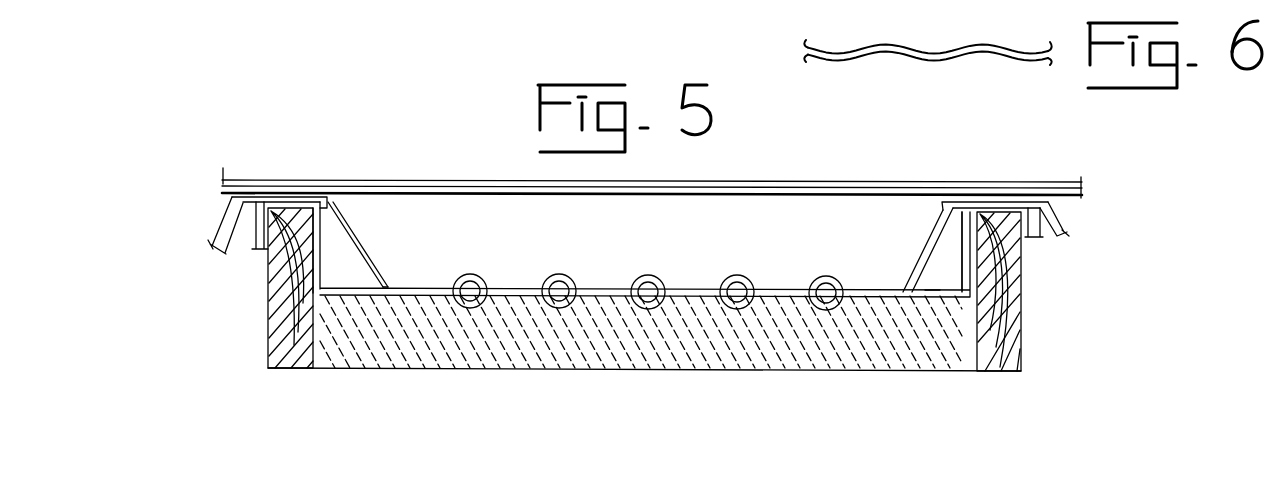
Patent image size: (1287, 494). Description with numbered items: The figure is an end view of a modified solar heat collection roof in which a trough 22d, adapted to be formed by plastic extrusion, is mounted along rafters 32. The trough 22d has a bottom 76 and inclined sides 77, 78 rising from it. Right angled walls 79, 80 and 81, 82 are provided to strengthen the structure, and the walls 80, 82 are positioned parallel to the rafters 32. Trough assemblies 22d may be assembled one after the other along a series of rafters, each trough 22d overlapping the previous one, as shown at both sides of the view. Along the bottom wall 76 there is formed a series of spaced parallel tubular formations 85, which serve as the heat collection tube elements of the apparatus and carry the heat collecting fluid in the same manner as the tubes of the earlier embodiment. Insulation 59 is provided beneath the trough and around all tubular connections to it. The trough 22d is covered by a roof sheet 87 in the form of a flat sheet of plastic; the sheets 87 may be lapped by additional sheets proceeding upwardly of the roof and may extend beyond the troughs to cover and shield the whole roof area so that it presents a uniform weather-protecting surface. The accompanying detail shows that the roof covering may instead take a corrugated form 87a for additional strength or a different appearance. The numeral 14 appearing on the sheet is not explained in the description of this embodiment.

In FIG. 5, the solar collector housing 14 is at (370, 8).
In FIG. 5, the trough 22d is at (219, 219).
In FIG. 5, the rafters 32 is at (268, 316).
In FIG. 5, the insulation 59 is at (666, 353).
In FIG. 5, the bottom 76 is at (415, 289).
In FIG. 5, the inclined side 77 is at (352, 226).
In FIG. 5, the inclined side 78 is at (220, 241).
In FIG. 5, the right angled wall 79 is at (350, 287).
In FIG. 5, the right angled wall 80 is at (333, 204).
In FIG. 5, the right angled wall 81 is at (936, 288).
In FIG. 5, the right angled wall 82 is at (254, 239).
In FIG. 5, the tubular formations 85 is at (467, 274).
In FIG. 5, the roof sheet 87 is at (750, 182).
In FIG. 6, the corrugated form 87a is at (927, 38).